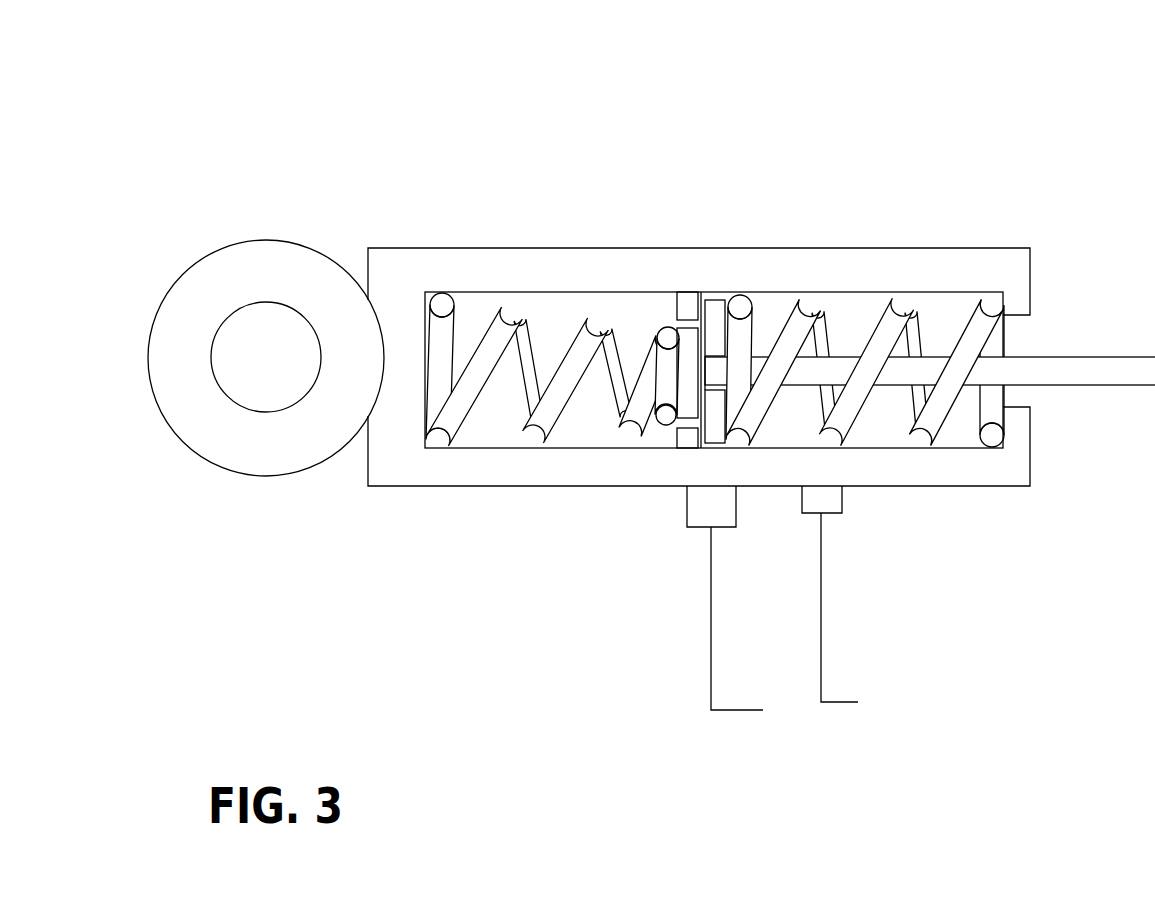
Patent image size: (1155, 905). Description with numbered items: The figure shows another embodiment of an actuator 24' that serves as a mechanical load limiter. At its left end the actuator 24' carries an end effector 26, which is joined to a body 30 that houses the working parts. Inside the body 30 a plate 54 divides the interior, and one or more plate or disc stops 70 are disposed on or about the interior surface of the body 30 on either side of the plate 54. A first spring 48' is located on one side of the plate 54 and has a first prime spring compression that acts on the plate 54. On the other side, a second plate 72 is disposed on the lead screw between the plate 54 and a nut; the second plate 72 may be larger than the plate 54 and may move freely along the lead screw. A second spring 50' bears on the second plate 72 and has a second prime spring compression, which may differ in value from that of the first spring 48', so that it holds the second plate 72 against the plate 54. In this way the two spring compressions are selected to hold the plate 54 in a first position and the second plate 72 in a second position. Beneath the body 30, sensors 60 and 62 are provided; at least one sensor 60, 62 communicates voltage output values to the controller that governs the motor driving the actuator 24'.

The actuator 24' is at (710, 268).
The end effector 26 is at (258, 238).
The body 30 is at (463, 243).
The first spring 48' is at (552, 307).
The second spring 50' is at (930, 305).
The plate 54 is at (657, 330).
The stops 70 is at (668, 302).
The second plate 72 is at (717, 293).
The sensor 60 is at (685, 527).
The sensor 62 is at (842, 513).